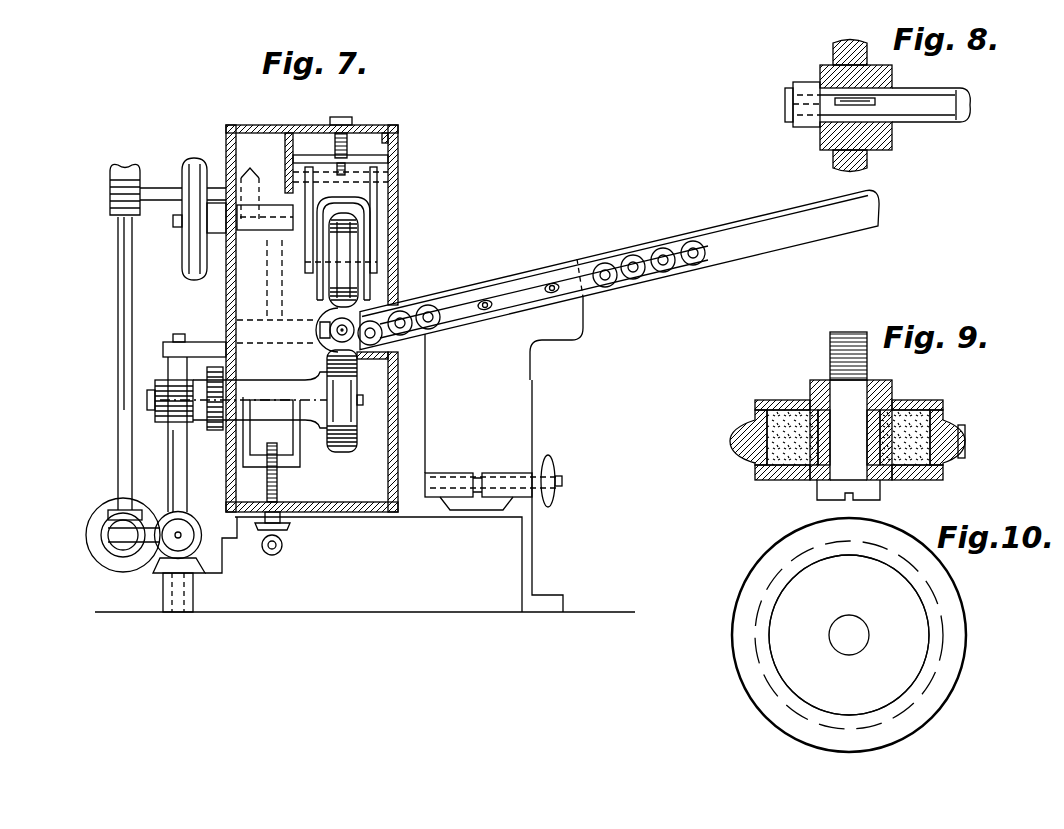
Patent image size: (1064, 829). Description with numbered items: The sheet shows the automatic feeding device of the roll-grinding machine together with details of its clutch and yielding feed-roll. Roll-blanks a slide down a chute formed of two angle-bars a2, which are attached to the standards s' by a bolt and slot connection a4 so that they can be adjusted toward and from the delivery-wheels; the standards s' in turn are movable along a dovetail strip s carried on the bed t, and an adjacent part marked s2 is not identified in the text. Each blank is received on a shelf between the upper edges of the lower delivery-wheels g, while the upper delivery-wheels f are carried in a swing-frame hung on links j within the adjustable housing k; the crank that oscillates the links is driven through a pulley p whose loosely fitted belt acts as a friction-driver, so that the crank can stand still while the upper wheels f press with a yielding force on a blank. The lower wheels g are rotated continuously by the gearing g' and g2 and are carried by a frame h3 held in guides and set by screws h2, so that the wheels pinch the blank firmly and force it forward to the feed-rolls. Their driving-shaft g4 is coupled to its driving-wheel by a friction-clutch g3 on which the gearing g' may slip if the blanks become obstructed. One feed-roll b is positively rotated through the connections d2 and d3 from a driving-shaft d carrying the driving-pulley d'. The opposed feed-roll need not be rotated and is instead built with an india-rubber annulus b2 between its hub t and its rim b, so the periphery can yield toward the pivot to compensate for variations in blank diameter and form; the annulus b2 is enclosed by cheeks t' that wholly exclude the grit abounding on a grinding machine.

In FIG. 7, the feed-roll b is at (252, 320).
In FIG. 9, the feed-roll b is at (958, 435).
In FIG. 10, the feed-roll b is at (955, 615).
In FIG. 7, the driving-shaft d is at (125, 549).
In FIG. 7, the driving-pulley d' is at (100, 535).
In FIG. 7, the connection d2 is at (125, 165).
In FIG. 7, the connection d3 is at (118, 278).
In FIG. 7, the pulley p is at (196, 158).
In FIG. 7, the screw h2 is at (345, 140).
In FIG. 7, the frame h3 is at (290, 458).
In FIG. 7, the adjustable housing k is at (390, 160).
In FIG. 7, the lower delivery-wheel g is at (365, 318).
In FIG. 7, the gearing g' is at (182, 417).
In FIG. 8, the gearing g' is at (835, 101).
In FIG. 7, the gearing g2 is at (157, 373).
In FIG. 8, the friction-clutch g3 is at (822, 73).
In FIG. 7, the driving-shaft g4 is at (255, 392).
In FIG. 8, the driving-shaft g4 is at (940, 107).
In FIG. 7, the link j is at (375, 218).
In FIG. 7, the upper delivery-wheel f is at (343, 252).
In FIG. 7, the roll-blank a is at (433, 315).
In FIG. 7, the chute angle-bar a2 is at (428, 337).
In FIG. 7, the bolt and slot connection a4 is at (552, 285).
In FIG. 7, the dovetail strip s is at (492, 511).
In FIG. 7, the standard s' is at (528, 354).
In FIG. 7, the hand knob s2 is at (562, 481).
In FIG. 7, the bed t is at (494, 473).
In FIG. 9, the bed t is at (811, 425).
In FIG. 10, the bed t is at (863, 635).
In FIG. 9, the cheek t' is at (869, 420).
In FIG. 10, the cheek t' is at (849, 635).
In FIG. 9, the india-rubber annulus b2 is at (790, 435).